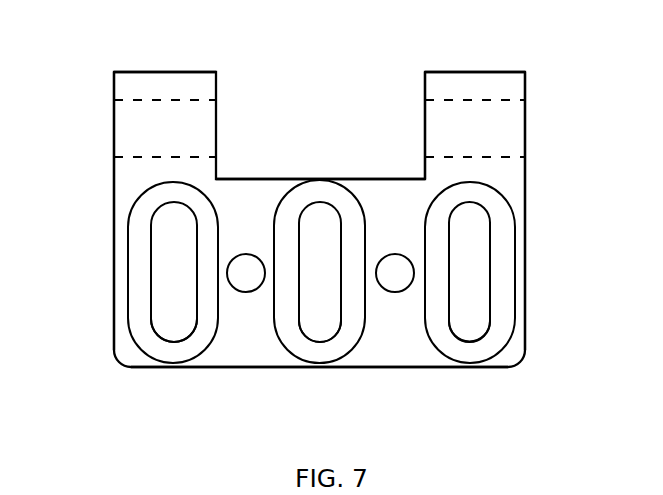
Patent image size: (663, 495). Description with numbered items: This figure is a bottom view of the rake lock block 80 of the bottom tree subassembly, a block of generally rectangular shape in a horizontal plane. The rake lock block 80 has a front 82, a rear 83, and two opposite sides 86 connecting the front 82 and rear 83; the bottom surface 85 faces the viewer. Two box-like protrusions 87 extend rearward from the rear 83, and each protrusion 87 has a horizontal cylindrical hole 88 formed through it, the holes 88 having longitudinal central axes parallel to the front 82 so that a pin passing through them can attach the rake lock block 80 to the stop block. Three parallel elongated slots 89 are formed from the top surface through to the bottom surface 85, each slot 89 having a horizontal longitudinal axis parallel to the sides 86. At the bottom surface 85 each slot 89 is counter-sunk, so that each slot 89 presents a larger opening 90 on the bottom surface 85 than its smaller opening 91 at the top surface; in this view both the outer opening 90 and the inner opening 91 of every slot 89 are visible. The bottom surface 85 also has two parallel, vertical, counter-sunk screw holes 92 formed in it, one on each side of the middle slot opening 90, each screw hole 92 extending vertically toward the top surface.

The rake lock block 80 is at (112, 186).
The front 82 is at (437, 370).
The rear 83 is at (246, 177).
The bottom surface 85 is at (510, 168).
The sides 86 is at (112, 268).
The protrusions 87 is at (168, 70).
The holes 88 is at (120, 124).
The slots 89 is at (173, 213).
The opening 90 is at (186, 348).
The opening 91 is at (165, 327).
The screw holes 92 is at (247, 253).